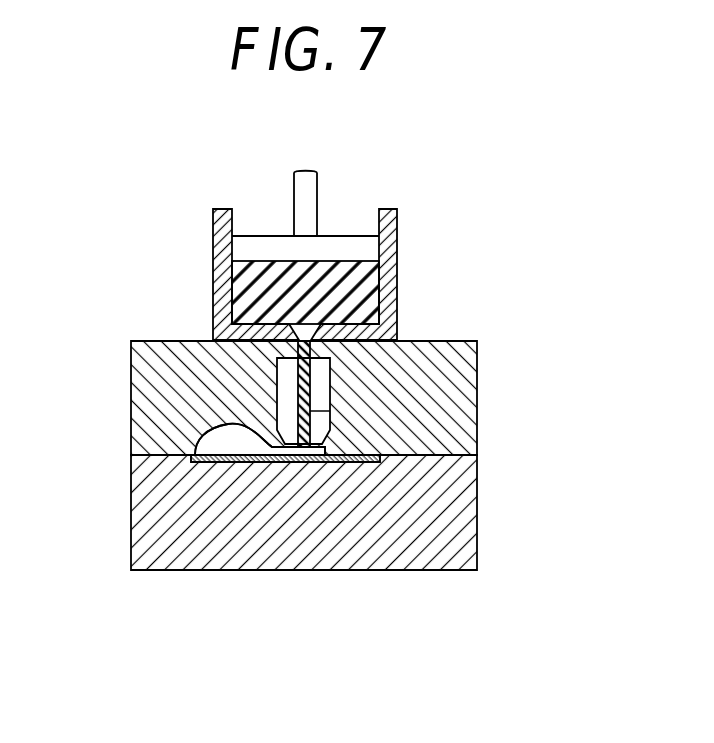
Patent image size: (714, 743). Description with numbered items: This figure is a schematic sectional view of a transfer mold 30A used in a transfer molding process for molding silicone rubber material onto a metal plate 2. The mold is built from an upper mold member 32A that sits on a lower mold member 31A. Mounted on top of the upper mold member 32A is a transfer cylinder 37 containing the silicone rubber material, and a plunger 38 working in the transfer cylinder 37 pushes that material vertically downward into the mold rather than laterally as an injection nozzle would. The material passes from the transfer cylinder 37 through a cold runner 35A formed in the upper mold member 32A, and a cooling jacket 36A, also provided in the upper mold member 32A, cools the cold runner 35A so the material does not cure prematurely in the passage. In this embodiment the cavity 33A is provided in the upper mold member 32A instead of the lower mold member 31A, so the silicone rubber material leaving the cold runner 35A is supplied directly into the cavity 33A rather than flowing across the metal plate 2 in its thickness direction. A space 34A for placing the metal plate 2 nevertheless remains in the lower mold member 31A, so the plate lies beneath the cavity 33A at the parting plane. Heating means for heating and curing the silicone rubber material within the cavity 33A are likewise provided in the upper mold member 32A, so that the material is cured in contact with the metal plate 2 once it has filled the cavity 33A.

The metal plate 2 is at (353, 462).
The transfer mold 30A is at (444, 235).
The lower mold member 31A is at (438, 526).
The upper mold member 32A is at (445, 402).
The cavity 33A is at (217, 435).
The space 34A is at (200, 461).
The cold runner 35A is at (311, 411).
The cooling jacket 36A is at (323, 372).
The transfer cylinder 37 is at (397, 283).
The plunger 38 is at (265, 245).